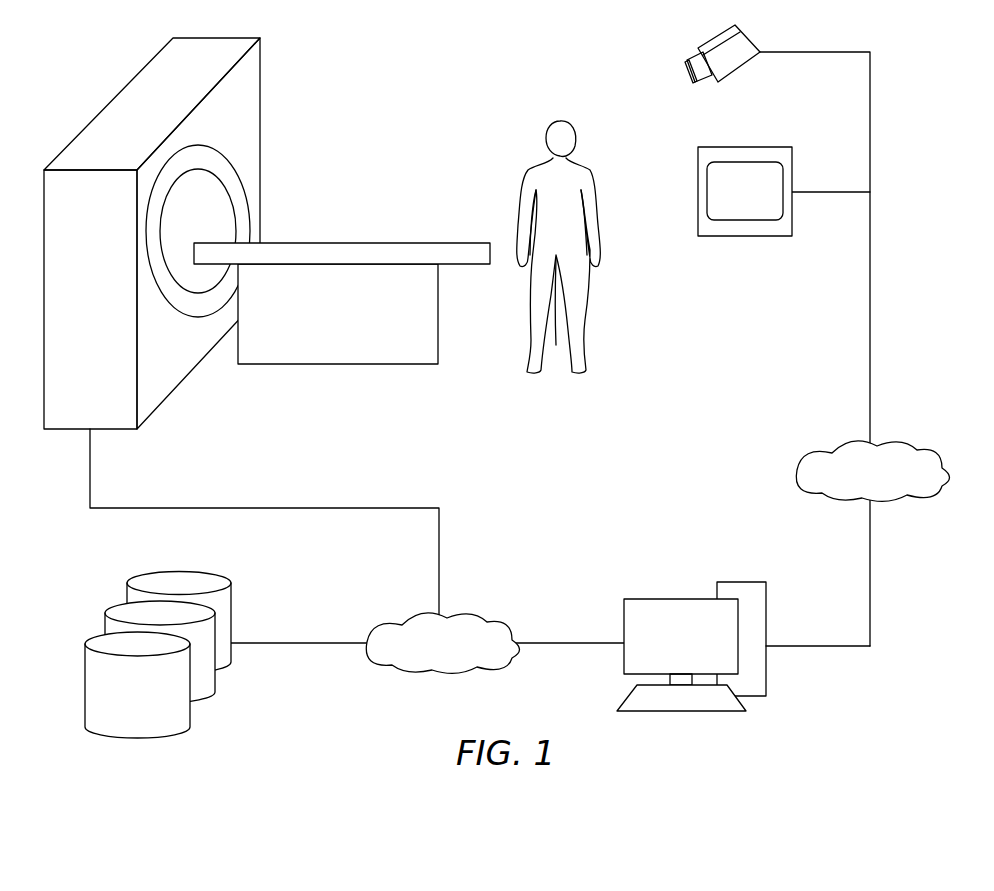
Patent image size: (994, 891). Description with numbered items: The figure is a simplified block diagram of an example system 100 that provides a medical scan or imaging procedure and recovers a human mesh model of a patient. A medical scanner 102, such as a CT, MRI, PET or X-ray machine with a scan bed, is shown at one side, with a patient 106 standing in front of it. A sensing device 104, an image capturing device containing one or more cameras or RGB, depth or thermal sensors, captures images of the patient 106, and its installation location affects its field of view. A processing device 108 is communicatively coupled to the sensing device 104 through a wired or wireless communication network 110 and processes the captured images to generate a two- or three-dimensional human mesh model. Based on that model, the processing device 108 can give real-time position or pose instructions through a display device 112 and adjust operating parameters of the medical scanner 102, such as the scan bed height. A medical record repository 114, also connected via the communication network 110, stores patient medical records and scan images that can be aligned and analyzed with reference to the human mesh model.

The system 100 is at (446, 64).
The medical scanner 102 is at (252, 110).
The sensing device 104 is at (728, 68).
The patient 106 is at (587, 198).
The processing device 108 is at (682, 607).
The communication network 110 is at (383, 628).
The display device 112 is at (772, 227).
The medical record repository 114 is at (107, 720).